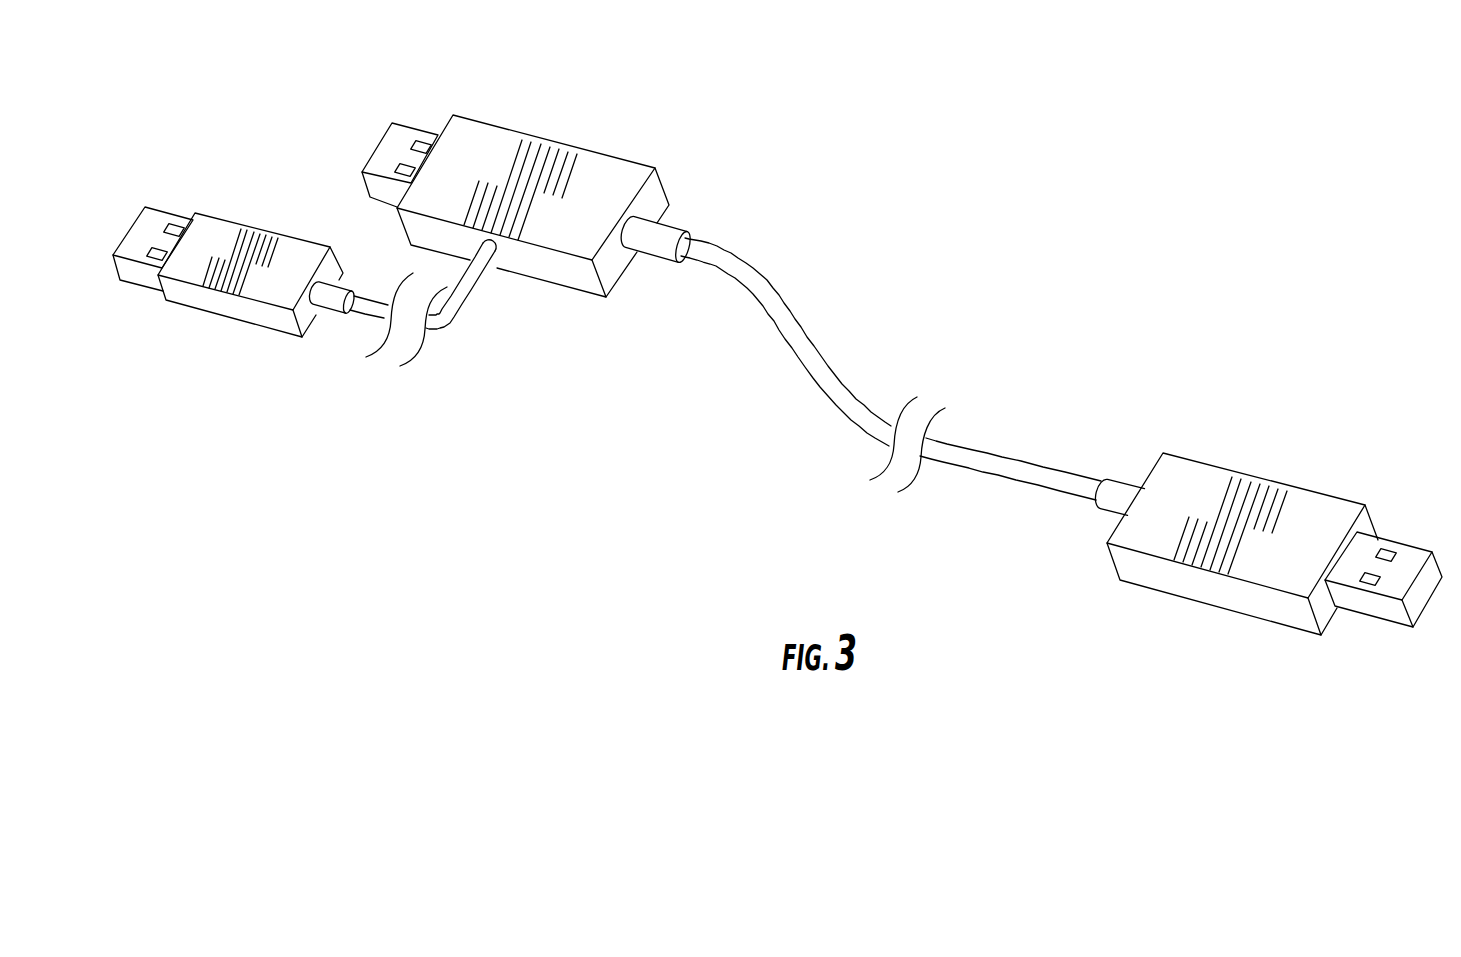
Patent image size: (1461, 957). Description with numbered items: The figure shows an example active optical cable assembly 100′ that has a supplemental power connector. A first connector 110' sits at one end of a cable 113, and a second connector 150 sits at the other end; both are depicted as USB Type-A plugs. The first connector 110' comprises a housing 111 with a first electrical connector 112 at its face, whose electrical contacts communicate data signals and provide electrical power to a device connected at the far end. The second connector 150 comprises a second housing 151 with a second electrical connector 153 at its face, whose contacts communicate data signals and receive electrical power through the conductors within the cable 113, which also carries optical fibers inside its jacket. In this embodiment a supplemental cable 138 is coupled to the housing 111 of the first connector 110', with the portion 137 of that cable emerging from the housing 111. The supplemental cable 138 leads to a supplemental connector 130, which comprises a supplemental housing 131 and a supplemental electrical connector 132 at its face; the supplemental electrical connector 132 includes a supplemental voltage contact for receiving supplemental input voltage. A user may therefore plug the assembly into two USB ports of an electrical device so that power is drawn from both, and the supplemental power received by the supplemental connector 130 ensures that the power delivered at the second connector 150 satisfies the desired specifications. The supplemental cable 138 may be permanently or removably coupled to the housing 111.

The active optical cable assembly 100′ is at (1070, 148).
The first connector 110' is at (527, 194).
The housing 111 is at (487, 124).
The first electrical connector 112 is at (412, 129).
The cable 113 is at (797, 316).
The supplemental connector 130 is at (310, 424).
The supplemental housing 131 is at (227, 318).
The supplemental electrical connector 132 is at (165, 210).
The strain relief cable segment 137 is at (498, 252).
The supplemental cable 138 is at (450, 326).
The second connector 150 is at (1282, 434).
The second housing 151 is at (1197, 461).
The second electrical connector 153 is at (1400, 543).